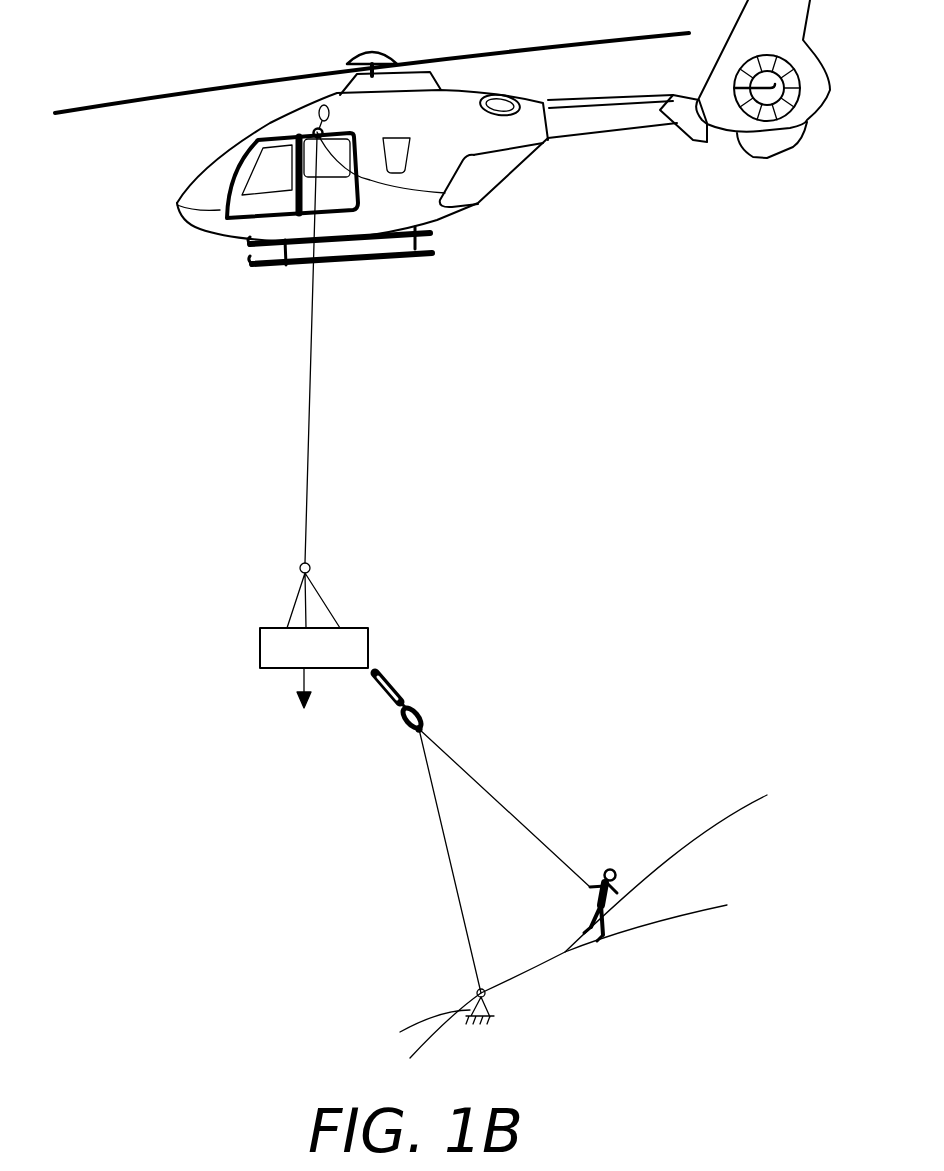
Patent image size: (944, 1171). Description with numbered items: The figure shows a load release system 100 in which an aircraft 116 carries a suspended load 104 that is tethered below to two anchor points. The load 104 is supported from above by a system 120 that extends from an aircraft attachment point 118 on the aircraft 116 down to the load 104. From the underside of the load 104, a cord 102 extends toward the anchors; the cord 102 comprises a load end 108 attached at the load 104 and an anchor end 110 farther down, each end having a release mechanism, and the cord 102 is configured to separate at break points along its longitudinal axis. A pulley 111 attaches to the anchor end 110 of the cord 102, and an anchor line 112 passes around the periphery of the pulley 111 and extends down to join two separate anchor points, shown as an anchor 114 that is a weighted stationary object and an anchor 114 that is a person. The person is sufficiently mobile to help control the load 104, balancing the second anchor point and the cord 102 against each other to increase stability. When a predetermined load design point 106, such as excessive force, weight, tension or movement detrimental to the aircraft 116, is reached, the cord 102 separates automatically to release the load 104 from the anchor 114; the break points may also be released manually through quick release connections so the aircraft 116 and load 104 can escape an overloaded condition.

The load release system 100 is at (603, 525).
The cord 102 is at (398, 690).
The load 104 is at (260, 647).
The predetermined load design point 106 is at (302, 677).
The load end 108 is at (377, 668).
The anchor end 110 is at (417, 720).
The pulley 111 is at (423, 726).
The anchor line 112 is at (477, 782).
The anchor 114 is at (618, 880).
The aircraft 116 is at (223, 235).
The aircraft attachment point 118 is at (453, 206).
The system 120 is at (314, 385).